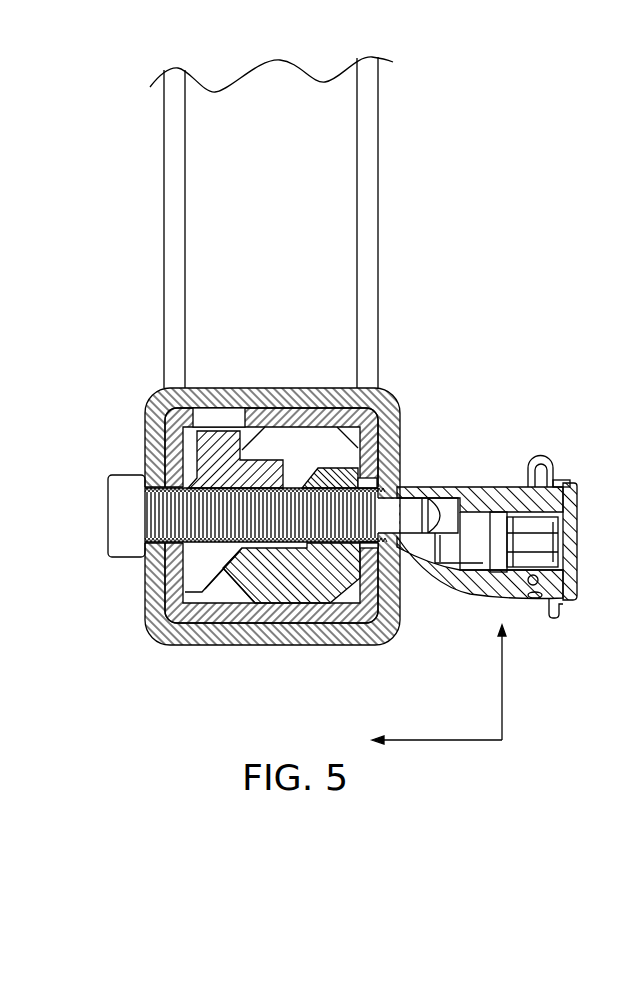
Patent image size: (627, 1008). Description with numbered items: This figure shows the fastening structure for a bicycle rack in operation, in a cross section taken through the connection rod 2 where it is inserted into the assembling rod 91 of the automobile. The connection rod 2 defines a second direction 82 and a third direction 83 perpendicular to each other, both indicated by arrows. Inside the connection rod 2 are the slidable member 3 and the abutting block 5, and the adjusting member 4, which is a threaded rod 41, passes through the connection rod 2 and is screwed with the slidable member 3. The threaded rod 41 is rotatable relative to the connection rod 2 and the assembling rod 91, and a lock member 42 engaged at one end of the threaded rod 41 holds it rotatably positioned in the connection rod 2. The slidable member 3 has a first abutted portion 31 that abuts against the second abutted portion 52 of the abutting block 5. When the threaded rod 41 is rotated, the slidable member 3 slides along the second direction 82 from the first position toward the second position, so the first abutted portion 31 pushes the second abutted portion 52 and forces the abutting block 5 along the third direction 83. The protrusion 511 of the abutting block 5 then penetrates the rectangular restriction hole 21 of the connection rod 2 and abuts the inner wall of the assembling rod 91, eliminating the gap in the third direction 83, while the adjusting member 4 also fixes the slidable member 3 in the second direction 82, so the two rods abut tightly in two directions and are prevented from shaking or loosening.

The connection rod 2 is at (385, 408).
The assembling rod 91 is at (388, 445).
The restriction hole 21 is at (212, 397).
The protrusion 511 is at (167, 427).
The first abutted portion 31 is at (305, 475).
The adjusting member 4 is at (173, 517).
The threaded rod 41 is at (168, 527).
The abutting block 5 is at (202, 563).
The second abutted portion 52 is at (212, 587).
The slidable member 3 is at (318, 592).
The lock member 42 is at (515, 497).
The third direction 83 is at (502, 680).
The second direction 82 is at (430, 740).